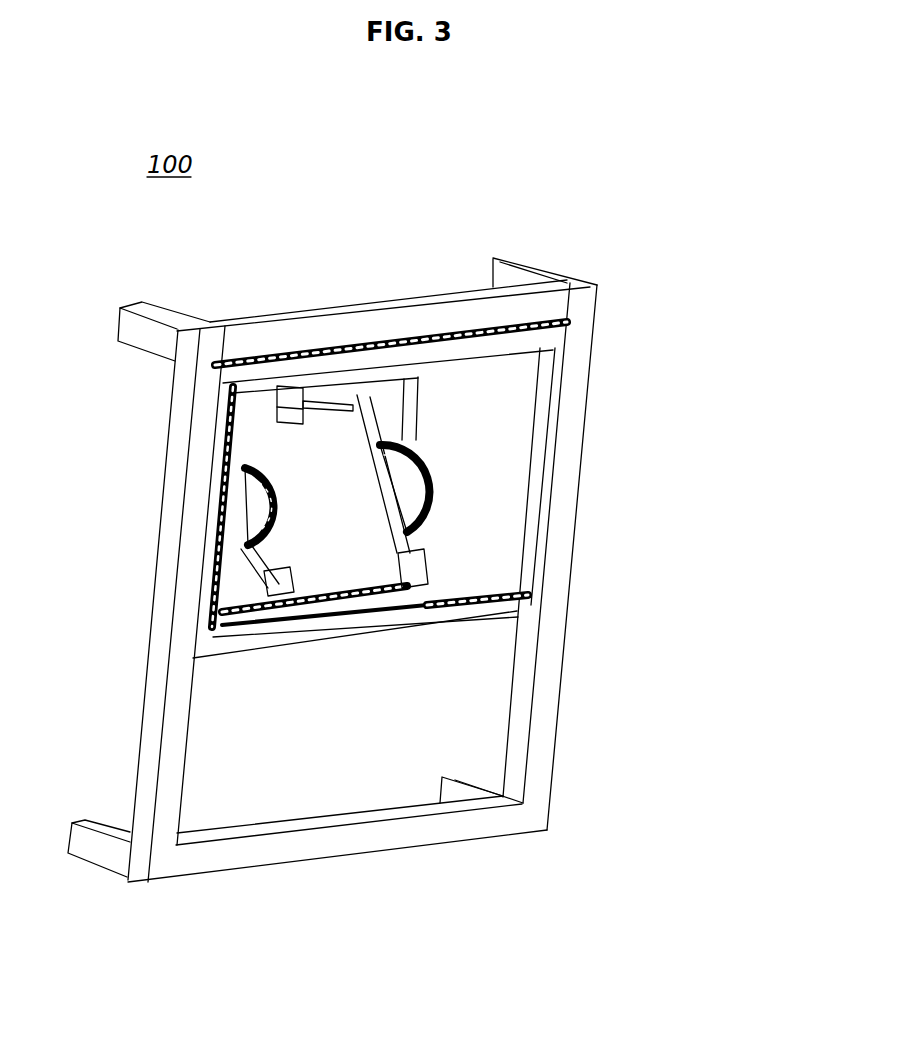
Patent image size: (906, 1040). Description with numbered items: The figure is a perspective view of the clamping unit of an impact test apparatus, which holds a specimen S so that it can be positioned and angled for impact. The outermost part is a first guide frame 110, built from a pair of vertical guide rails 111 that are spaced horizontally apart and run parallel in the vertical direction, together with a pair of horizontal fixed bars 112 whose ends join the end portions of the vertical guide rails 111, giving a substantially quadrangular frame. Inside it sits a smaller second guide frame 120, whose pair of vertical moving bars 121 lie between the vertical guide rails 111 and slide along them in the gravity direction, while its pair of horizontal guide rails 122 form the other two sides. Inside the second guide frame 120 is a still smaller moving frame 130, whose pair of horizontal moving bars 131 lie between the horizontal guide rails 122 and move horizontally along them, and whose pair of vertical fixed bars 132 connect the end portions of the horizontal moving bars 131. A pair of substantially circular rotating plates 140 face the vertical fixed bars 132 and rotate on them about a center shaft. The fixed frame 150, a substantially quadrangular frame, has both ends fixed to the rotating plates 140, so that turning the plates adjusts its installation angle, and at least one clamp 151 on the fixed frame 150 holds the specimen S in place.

The first guide frame 110 is at (705, 258).
The vertical guide rail 111 is at (580, 353).
The horizontal fixed bar 112 is at (543, 307).
The second guide frame 120 is at (711, 562).
The vertical moving bar 121 is at (543, 553).
The horizontal guide rail 122 is at (497, 612).
The moving frame 130 is at (432, 212).
The horizontal moving bar 131 is at (359, 395).
The vertical fixed bar 132 is at (427, 400).
The rotating plate 140 is at (385, 460).
The fixed frame 150 is at (323, 403).
The clamp 151 is at (290, 403).
The specimen S is at (313, 555).